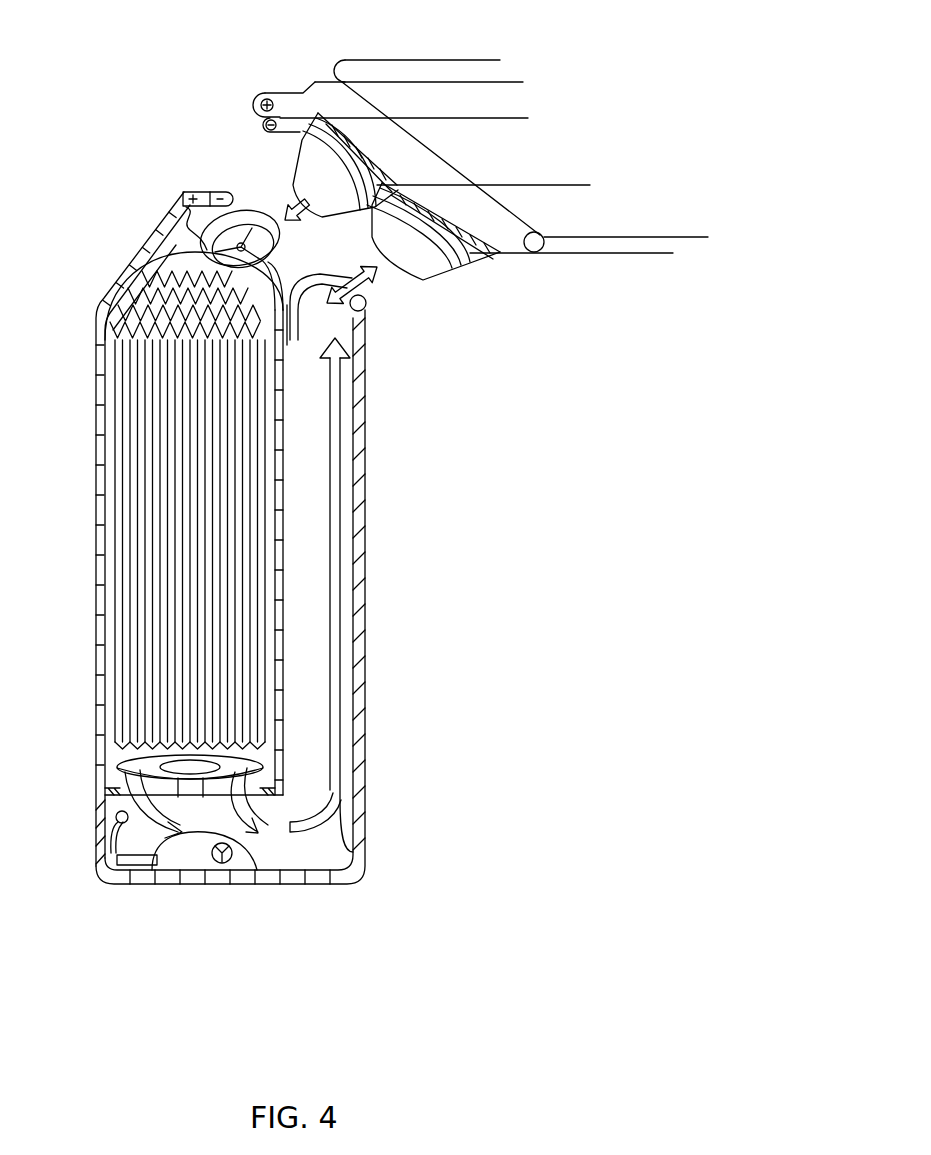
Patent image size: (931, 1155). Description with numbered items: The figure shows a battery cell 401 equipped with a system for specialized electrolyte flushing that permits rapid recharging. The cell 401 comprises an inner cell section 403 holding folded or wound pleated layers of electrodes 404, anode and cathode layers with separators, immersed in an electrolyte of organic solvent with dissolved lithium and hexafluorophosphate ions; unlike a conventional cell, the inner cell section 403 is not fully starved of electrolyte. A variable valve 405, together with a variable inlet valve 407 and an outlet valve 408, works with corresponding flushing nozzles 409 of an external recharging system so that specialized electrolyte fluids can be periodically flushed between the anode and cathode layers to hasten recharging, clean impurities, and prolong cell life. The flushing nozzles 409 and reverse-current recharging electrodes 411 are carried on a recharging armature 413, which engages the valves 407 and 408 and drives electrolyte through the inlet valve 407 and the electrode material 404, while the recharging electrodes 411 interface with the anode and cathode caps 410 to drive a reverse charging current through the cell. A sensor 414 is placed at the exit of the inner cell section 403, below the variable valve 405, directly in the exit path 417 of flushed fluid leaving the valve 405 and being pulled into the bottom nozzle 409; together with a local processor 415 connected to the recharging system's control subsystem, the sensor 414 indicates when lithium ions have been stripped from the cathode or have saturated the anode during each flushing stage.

The battery cell 401 is at (80, 881).
The inner cell section 403 is at (300, 743).
The electrodes 404 is at (183, 593).
The variable valve 405 is at (175, 765).
The variable inlet valve 407 is at (233, 237).
The outlet valve 408 is at (310, 302).
The flushing nozzles 409 is at (328, 205).
The anode and cathode caps 410 is at (215, 195).
The reverse-current recharging electrodes 411 is at (260, 122).
The recharging armature 413 is at (530, 165).
The sensor 414 is at (147, 862).
The local processor 415 is at (237, 862).
The exit path 417 is at (352, 845).